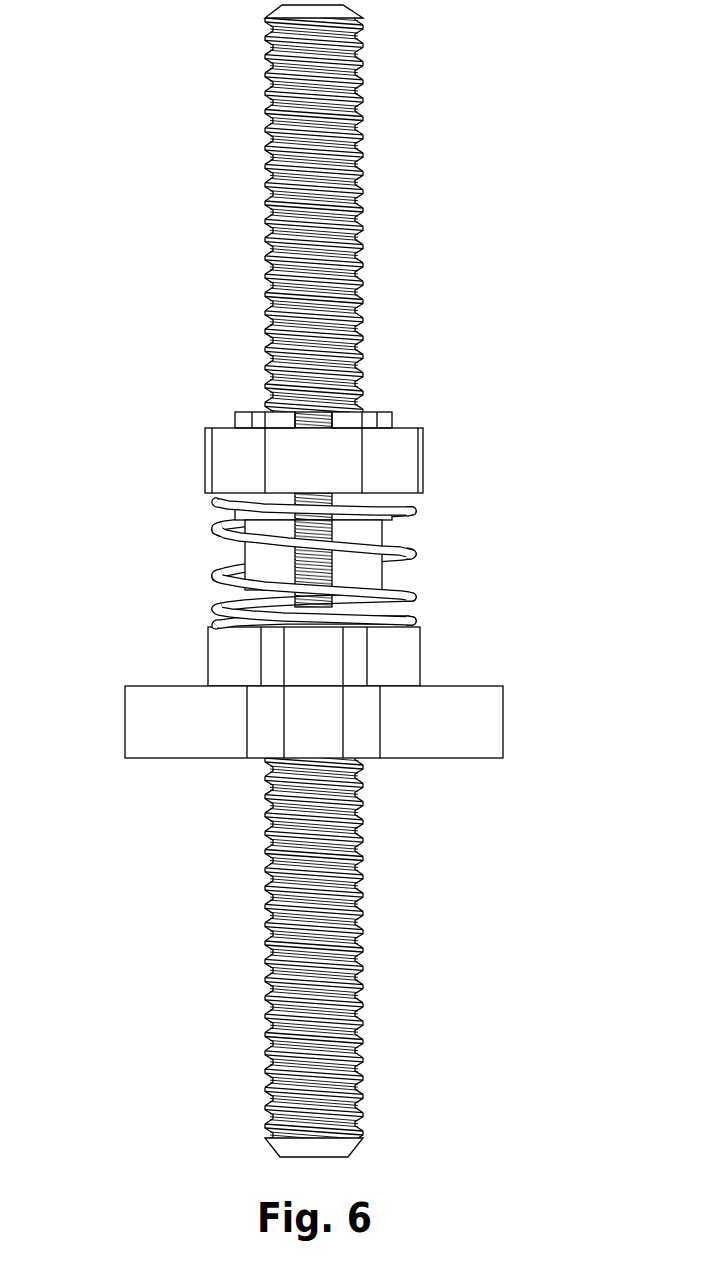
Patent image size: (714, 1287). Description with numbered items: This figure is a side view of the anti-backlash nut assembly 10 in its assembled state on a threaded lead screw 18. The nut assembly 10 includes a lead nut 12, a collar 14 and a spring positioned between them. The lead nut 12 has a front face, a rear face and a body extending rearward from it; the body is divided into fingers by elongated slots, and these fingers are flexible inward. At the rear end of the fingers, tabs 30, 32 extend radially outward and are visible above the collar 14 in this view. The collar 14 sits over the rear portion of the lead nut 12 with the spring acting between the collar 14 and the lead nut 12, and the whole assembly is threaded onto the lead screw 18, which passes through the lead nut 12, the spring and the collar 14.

The nut assembly 10 is at (88, 571).
The lead nut 12 is at (503, 725).
The collar 14 is at (423, 452).
The threaded rod 18 is at (265, 233).
The tab 30 is at (258, 413).
The tab 32 is at (378, 412).